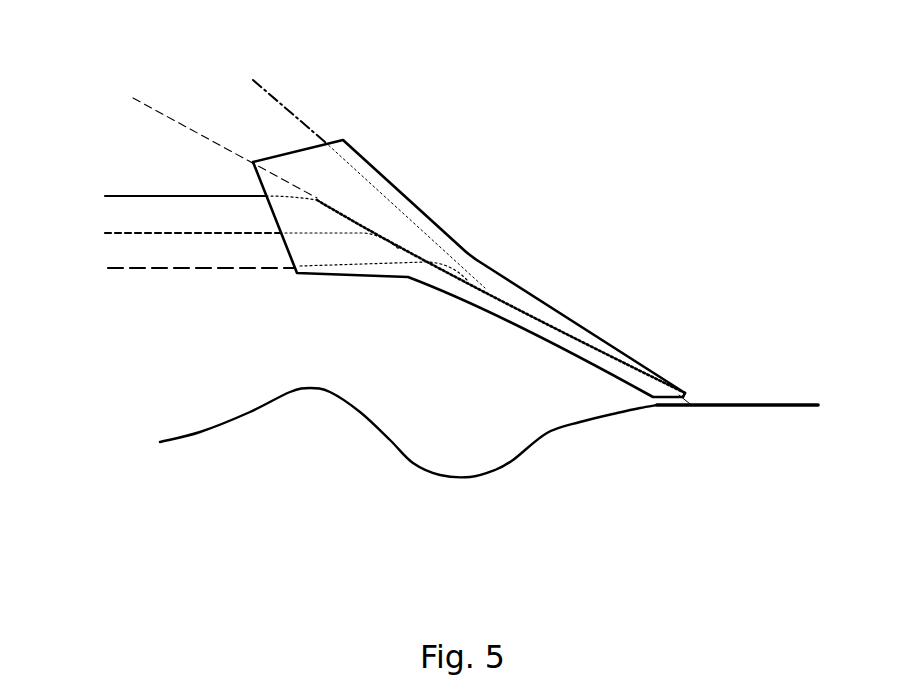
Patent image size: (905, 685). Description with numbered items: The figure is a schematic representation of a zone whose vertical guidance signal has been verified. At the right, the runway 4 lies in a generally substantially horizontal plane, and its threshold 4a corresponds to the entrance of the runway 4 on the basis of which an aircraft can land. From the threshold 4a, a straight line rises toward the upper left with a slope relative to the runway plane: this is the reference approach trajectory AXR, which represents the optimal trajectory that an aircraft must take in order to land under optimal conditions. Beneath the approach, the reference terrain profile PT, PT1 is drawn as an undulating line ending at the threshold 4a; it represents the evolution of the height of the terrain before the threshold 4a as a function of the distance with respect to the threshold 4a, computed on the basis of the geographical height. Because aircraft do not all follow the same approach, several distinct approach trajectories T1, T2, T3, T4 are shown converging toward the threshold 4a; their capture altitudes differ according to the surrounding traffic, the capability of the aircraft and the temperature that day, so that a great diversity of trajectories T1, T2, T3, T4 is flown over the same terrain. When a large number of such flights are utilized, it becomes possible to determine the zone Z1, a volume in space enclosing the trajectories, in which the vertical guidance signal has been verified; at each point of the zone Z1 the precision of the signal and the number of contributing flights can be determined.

The reference approach trajectory AXR is at (157, 110).
The approach trajectory T4 is at (278, 99).
The approach trajectory T3 is at (123, 194).
The approach trajectory T2 is at (118, 232).
The approach trajectory T1 is at (118, 272).
The zone Z1 is at (397, 184).
The threshold 4a is at (686, 392).
The runway 4 is at (780, 404).
The reference terrain profile PT is at (408, 476).
The reference terrain profile PT1 is at (413, 464).